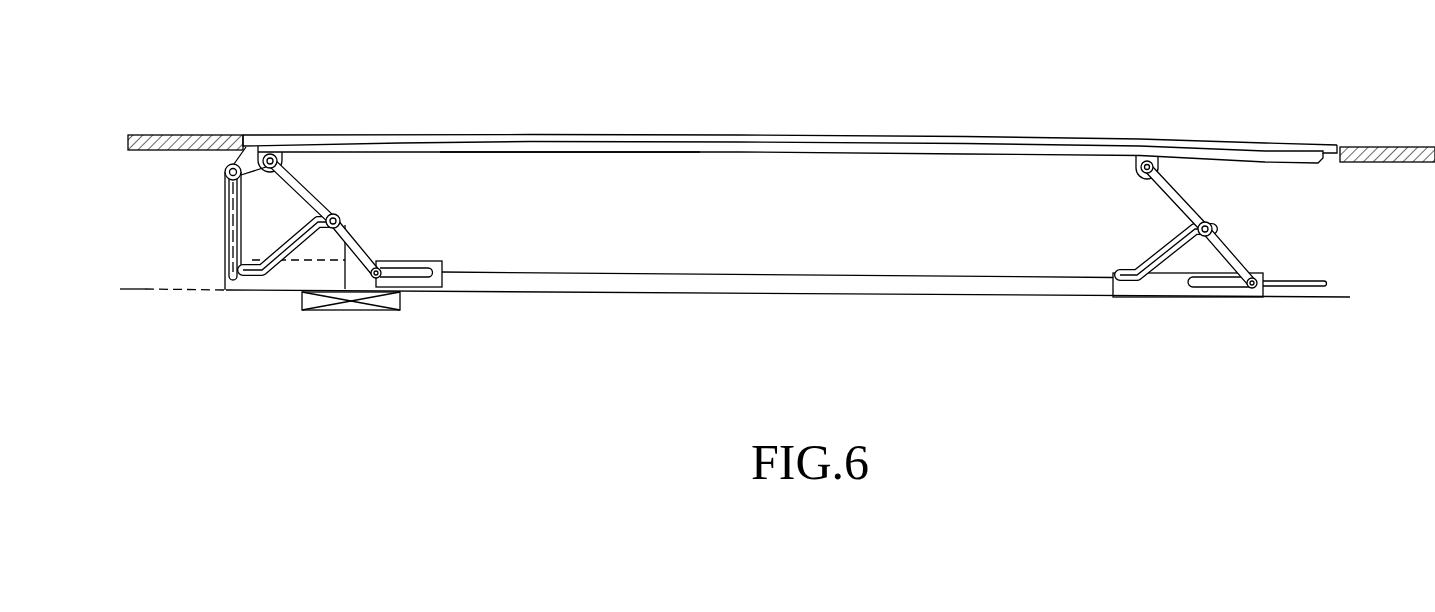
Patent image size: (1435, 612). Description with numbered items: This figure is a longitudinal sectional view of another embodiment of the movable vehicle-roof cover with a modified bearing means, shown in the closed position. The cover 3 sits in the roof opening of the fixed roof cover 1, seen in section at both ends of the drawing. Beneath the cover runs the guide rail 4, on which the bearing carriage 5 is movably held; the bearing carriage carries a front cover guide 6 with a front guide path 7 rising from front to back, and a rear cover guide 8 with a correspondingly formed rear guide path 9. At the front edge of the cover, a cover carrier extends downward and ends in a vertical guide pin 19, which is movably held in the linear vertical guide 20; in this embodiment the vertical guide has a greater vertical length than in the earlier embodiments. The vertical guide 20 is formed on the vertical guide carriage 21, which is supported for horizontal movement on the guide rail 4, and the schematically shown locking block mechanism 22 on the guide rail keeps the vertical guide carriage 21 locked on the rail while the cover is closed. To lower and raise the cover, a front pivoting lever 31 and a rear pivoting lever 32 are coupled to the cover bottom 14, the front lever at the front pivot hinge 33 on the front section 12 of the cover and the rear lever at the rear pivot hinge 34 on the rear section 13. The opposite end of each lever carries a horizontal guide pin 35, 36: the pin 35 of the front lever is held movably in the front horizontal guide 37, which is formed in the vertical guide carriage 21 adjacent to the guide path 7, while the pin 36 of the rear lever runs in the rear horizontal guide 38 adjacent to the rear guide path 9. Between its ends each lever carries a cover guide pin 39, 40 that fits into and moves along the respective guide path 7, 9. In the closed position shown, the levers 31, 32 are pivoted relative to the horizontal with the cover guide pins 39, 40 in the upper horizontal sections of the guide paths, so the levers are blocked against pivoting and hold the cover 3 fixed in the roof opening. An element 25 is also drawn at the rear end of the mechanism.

The fixed roof cover 1 is at (186, 125).
The cover 3 is at (738, 133).
The guide rail 4 is at (679, 295).
The bearing carriage 5 is at (812, 295).
The front cover guide 6 is at (318, 247).
The front guide path 7 is at (260, 285).
The rear cover guide 8 is at (1170, 276).
The rear guide path 9 is at (1133, 290).
The front section 12 is at (374, 133).
The rear section 13 is at (1181, 136).
The cover bottom 14 is at (562, 154).
The vertical guide pin 19 is at (229, 163).
The linear vertical guide 20 is at (233, 223).
The vertical guide carriage 21 is at (223, 273).
The locking block mechanism 22 is at (397, 297).
The bar 25 is at (1300, 288).
The front pivoting lever 31 is at (305, 192).
The rear pivoting lever 32 is at (1177, 185).
The front pivot hinge 33 is at (268, 153).
The rear pivot hinge 34 is at (1138, 158).
The horizontal guide pin 35 is at (378, 262).
The horizontal guide pin 36 is at (1248, 288).
The front horizontal guide 37 is at (417, 277).
The rear horizontal guide 38 is at (1207, 283).
The cover guide pin 39 is at (337, 205).
The cover guide pin 40 is at (1212, 220).